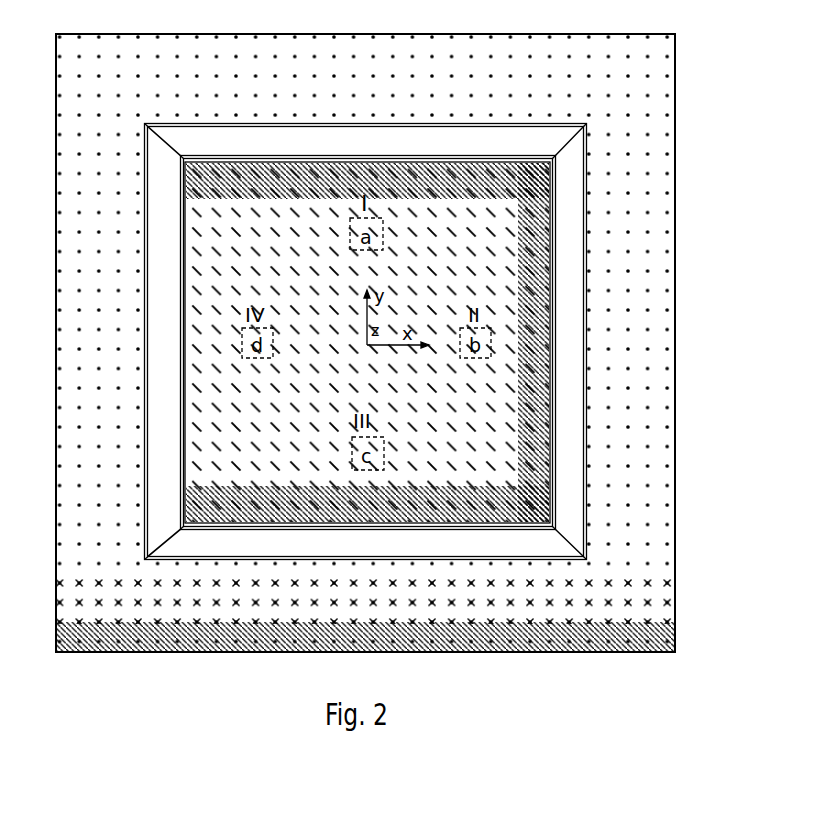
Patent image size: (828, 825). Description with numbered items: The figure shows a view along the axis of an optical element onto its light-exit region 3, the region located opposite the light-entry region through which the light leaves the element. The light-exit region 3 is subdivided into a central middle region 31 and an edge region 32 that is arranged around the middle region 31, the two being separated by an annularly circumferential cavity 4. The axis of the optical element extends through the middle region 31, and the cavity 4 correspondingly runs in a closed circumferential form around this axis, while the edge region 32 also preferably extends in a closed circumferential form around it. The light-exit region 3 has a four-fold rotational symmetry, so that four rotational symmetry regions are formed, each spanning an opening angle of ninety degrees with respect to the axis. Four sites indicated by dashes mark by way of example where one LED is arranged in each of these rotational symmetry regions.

The light-exit region 3 is at (365, 330).
The edge region 32 is at (445, 53).
The middle region 31 is at (403, 186).
The cavity 4 is at (568, 279).